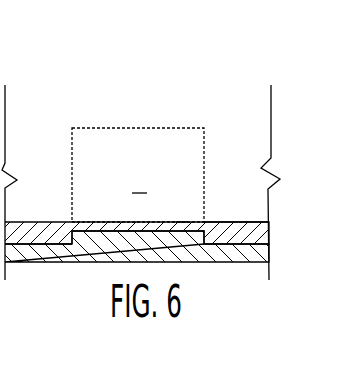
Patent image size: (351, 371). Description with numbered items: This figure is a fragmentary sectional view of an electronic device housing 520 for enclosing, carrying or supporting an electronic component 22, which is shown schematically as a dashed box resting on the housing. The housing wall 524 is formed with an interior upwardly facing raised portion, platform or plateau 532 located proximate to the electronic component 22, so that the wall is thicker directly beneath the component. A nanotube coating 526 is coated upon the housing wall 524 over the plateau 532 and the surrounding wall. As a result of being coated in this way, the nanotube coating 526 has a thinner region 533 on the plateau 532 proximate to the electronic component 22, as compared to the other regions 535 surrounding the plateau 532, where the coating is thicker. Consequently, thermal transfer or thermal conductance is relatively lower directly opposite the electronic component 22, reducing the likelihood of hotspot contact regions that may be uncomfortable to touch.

The electronic device housing 520 is at (234, 220).
The nanotube coating 526 is at (28, 222).
The housing wall 524 is at (65, 262).
The plateau 532 is at (98, 232).
The other regions 535 is at (249, 222).
The electronic component 22 is at (124, 128).
The thinner region 533 is at (182, 222).